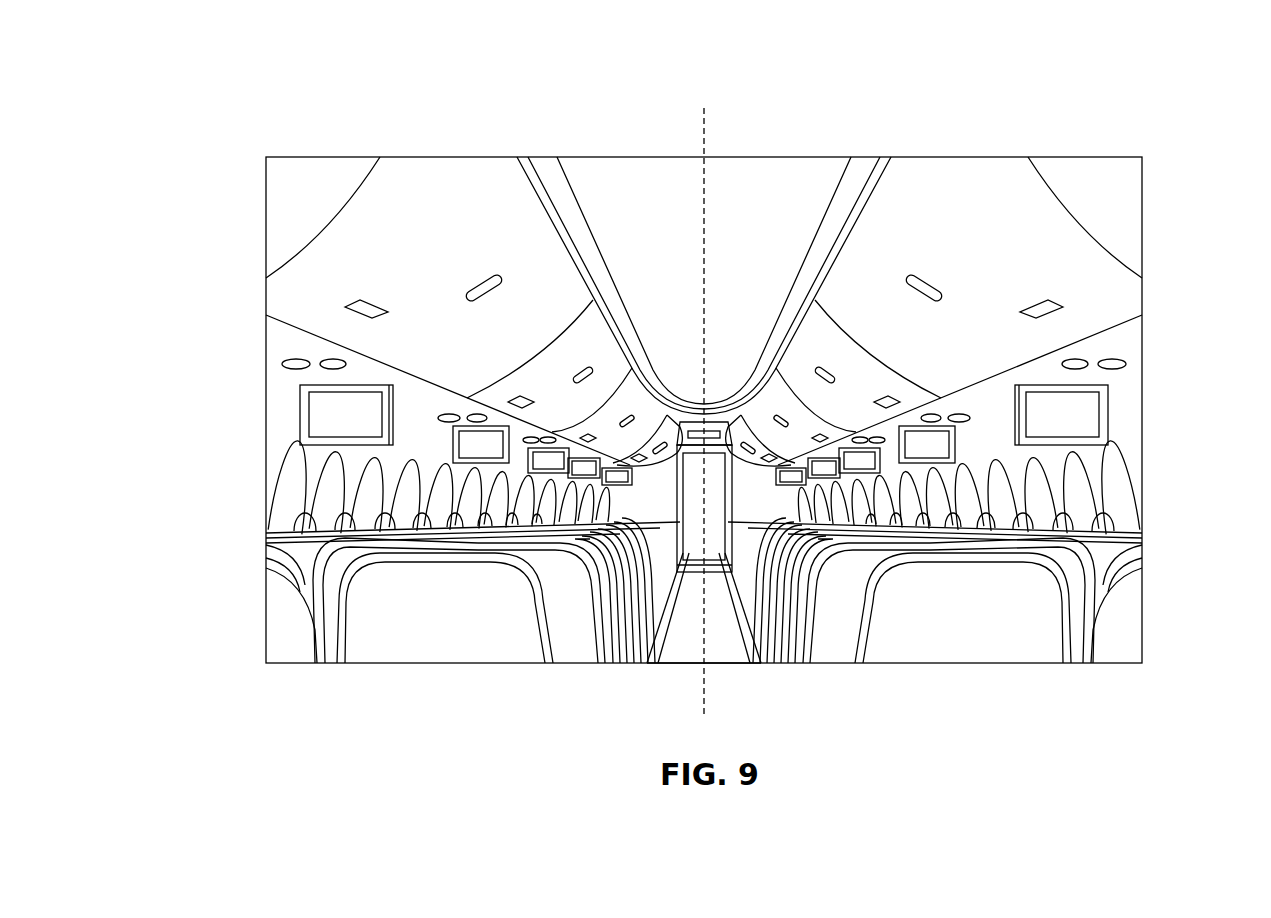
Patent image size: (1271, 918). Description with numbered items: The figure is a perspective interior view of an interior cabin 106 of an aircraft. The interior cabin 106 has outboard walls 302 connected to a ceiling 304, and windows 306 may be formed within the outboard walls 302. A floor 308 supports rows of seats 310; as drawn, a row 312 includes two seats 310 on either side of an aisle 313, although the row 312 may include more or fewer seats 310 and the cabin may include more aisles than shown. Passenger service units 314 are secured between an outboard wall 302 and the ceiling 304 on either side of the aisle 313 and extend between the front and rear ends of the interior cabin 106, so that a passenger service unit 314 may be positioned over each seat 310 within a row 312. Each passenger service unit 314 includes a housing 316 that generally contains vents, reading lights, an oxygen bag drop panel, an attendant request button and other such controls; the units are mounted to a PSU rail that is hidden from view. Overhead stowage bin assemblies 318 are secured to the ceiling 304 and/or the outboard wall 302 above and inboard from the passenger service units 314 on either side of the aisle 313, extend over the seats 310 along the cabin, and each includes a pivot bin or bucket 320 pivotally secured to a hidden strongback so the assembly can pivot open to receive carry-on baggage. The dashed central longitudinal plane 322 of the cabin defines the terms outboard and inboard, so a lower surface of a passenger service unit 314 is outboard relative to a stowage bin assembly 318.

The interior cabin 106 is at (210, 108).
The outboard wall 302 is at (278, 417).
The ceiling 304 is at (764, 156).
The window 306 is at (298, 522).
The floor 308 is at (692, 645).
The seat 310 is at (442, 650).
The row 312 is at (272, 623).
The aisle 313 is at (727, 645).
The passenger service unit 314 is at (296, 364).
The housing 316 is at (275, 355).
The overhead stowage bin assembly 318 is at (377, 210).
The pivot bin 320 is at (447, 175).
The central longitudinal plane 322 is at (701, 127).